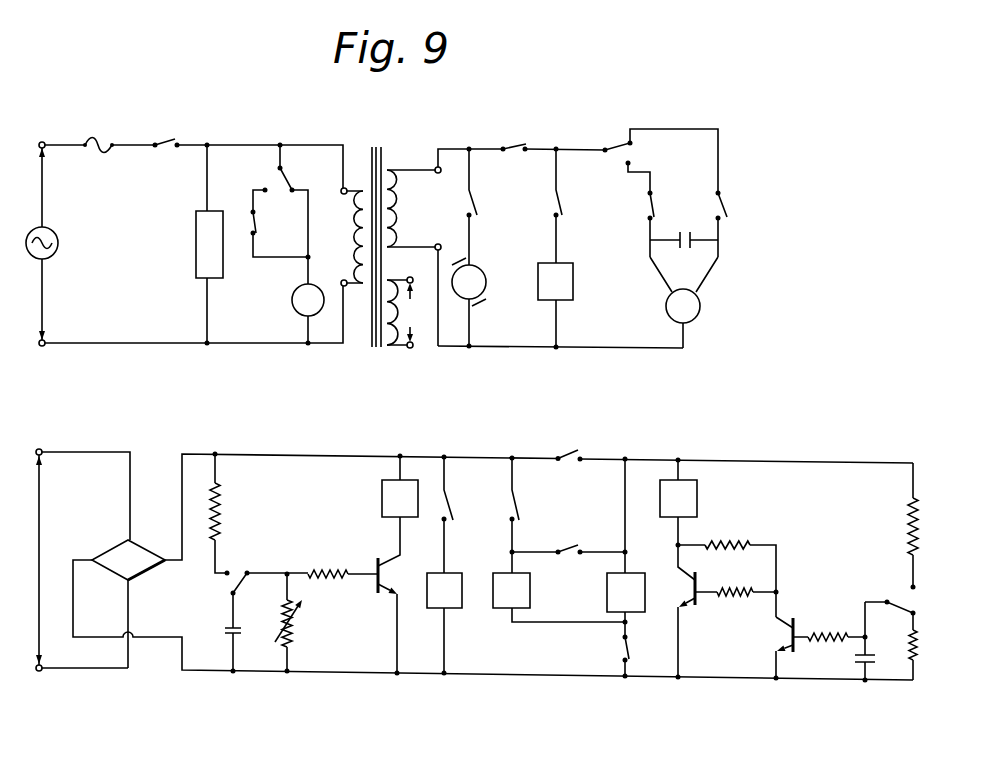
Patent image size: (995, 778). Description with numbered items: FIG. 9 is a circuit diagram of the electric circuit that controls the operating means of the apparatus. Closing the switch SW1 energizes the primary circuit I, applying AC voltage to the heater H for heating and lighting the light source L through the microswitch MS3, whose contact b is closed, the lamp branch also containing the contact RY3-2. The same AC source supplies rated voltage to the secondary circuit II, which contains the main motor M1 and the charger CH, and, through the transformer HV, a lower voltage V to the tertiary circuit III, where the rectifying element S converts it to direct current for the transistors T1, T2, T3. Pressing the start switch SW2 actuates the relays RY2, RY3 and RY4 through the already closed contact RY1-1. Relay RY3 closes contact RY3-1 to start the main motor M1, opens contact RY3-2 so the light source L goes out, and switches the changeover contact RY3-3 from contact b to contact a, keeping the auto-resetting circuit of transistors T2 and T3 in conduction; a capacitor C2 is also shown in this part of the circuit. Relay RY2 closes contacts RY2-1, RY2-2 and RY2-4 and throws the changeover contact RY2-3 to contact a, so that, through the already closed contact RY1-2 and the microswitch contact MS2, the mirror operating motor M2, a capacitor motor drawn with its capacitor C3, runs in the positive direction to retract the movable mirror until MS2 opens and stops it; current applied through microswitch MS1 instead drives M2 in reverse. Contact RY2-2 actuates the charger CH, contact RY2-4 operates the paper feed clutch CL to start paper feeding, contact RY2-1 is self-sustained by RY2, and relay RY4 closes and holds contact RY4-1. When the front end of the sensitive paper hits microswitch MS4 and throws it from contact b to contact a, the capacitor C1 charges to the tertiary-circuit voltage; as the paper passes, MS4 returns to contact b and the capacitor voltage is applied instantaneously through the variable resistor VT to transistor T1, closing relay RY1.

The primary circuit I is at (184, 232).
The secondary circuit II is at (599, 237).
The tertiary circuit III is at (499, 570).
The switch SW1 is at (248, 154).
The heater H is at (209, 244).
The microswitch MS3 is at (292, 200).
The contact RY3-2 is at (274, 236).
The light source L is at (308, 301).
The transformer HV is at (405, 235).
The voltage V is at (392, 326).
The contact RY1-2 is at (514, 138).
The contact RY3-1 is at (496, 182).
The main motor M1 is at (469, 282).
The contact RY2-2 is at (583, 182).
The charger CH is at (555, 282).
The changeover contact RY2-3 is at (661, 158).
The microswitch contact MS2 is at (670, 224).
The microswitch contact MS1 is at (739, 224).
The capacitor 3 C3 is at (684, 252).
The mirror operating motor M2 is at (684, 302).
The rectifying element S is at (128, 560).
The microswitch MS4 is at (261, 572).
The capacitor C1 is at (221, 633).
The variable resistor VT is at (299, 623).
The transistor T1 is at (354, 596).
The relay RY1 is at (400, 486).
The contact RY2-4 is at (469, 488).
The paper feed clutch CL is at (444, 597).
The start switch SW2 is at (533, 489).
The relay RY2 is at (559, 570).
The contact RY2-1 is at (568, 563).
The contact RY1-1 is at (592, 645).
The relay RY3 is at (626, 535).
The contact RY4-1 is at (583, 445).
The relay RY4 is at (678, 503).
The transistor T2 is at (693, 612).
The transistor T3 is at (820, 649).
The capacitor 2 C2 is at (854, 659).
The changeover contact RY3-3 is at (915, 571).